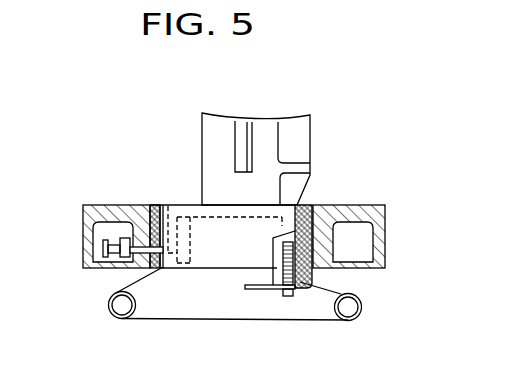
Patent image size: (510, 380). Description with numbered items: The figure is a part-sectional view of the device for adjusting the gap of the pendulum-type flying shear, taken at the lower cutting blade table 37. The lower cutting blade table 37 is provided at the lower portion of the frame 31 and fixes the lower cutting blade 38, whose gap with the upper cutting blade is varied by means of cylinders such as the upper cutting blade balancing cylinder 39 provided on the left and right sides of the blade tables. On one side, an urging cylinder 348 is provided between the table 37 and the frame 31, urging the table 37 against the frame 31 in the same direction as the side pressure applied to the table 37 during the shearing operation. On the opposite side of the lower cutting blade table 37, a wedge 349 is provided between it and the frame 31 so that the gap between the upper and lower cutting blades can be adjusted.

The frame 31 is at (385, 225).
The lower cutting blade table 37 is at (267, 127).
The lower cutting blade 38 is at (242, 128).
The upper cutting blade balancing cylinder 39 is at (108, 310).
The urging cylinder 348 is at (112, 268).
The wedge 349 is at (307, 288).